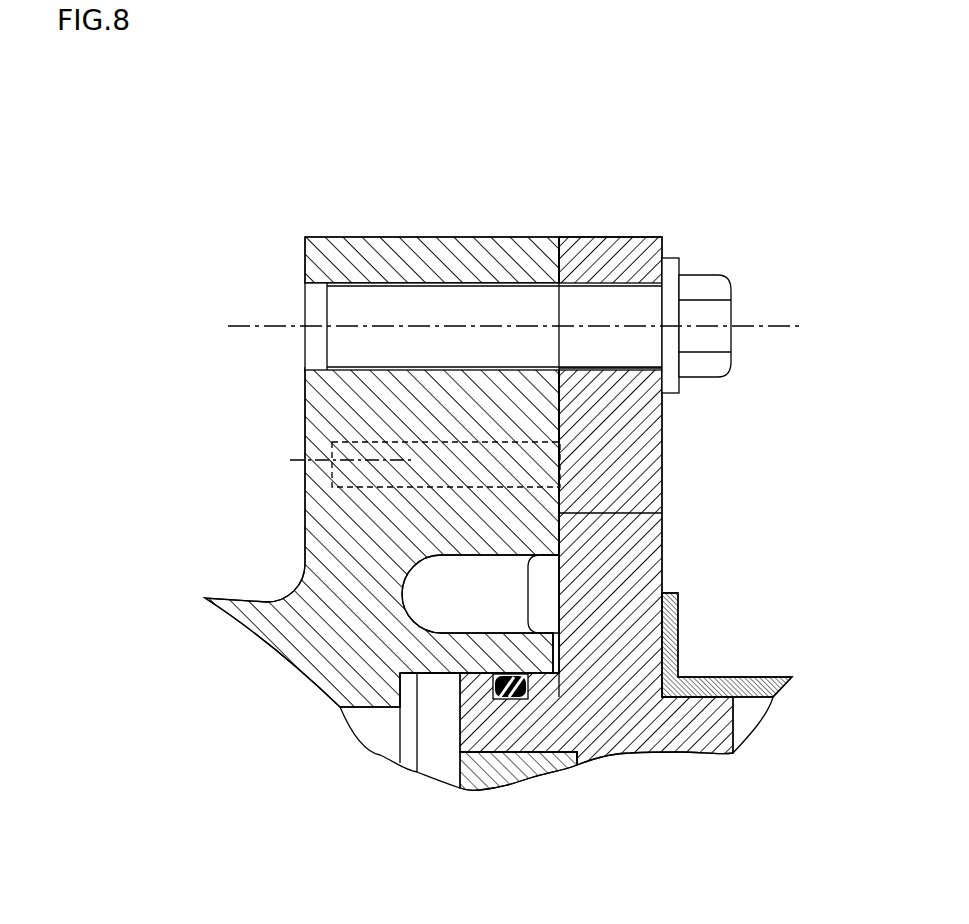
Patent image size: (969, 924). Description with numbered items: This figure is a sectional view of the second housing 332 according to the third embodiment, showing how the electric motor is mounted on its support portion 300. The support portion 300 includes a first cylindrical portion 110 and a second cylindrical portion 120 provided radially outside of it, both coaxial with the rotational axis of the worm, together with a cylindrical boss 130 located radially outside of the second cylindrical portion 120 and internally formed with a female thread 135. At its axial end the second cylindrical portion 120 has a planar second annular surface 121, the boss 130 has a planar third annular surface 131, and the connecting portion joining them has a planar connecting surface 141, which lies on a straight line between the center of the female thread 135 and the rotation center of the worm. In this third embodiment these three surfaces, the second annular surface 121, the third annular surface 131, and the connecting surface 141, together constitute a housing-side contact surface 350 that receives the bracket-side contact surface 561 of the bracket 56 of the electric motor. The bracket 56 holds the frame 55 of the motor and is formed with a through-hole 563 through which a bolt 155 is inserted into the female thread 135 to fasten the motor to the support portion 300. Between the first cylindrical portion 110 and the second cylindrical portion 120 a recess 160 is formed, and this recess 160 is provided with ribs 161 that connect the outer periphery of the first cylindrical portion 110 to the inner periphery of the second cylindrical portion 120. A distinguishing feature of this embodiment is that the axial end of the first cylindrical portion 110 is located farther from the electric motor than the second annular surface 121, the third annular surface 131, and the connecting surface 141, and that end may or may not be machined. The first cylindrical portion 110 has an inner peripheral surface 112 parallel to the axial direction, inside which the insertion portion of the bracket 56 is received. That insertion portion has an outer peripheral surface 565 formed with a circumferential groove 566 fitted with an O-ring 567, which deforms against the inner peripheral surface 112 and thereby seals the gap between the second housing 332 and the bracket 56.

The second housing 332 is at (221, 104).
The support portion 300 is at (262, 191).
The cylindrical boss 130 is at (315, 237).
The female thread 135 is at (387, 290).
The bracket-side contact surface 561 is at (553, 405).
The third annular surface 131 is at (572, 243).
The through-hole 563 is at (603, 283).
The bracket 56 is at (640, 237).
The bolt 155 is at (730, 290).
The second cylindrical portion 120 is at (437, 485).
The connecting surface 141 is at (560, 425).
The second annular surface 121 is at (600, 510).
The housing-side contact surface 350 is at (590, 533).
The recess 160 is at (400, 590).
The rib 161 is at (528, 593).
The frame 55 is at (748, 677).
The inner peripheral surface 112 is at (441, 678).
The outer peripheral surface 565 is at (470, 672).
The O-ring 567 is at (508, 700).
The groove 566 is at (530, 688).
The first cylindrical portion 110 is at (547, 675).